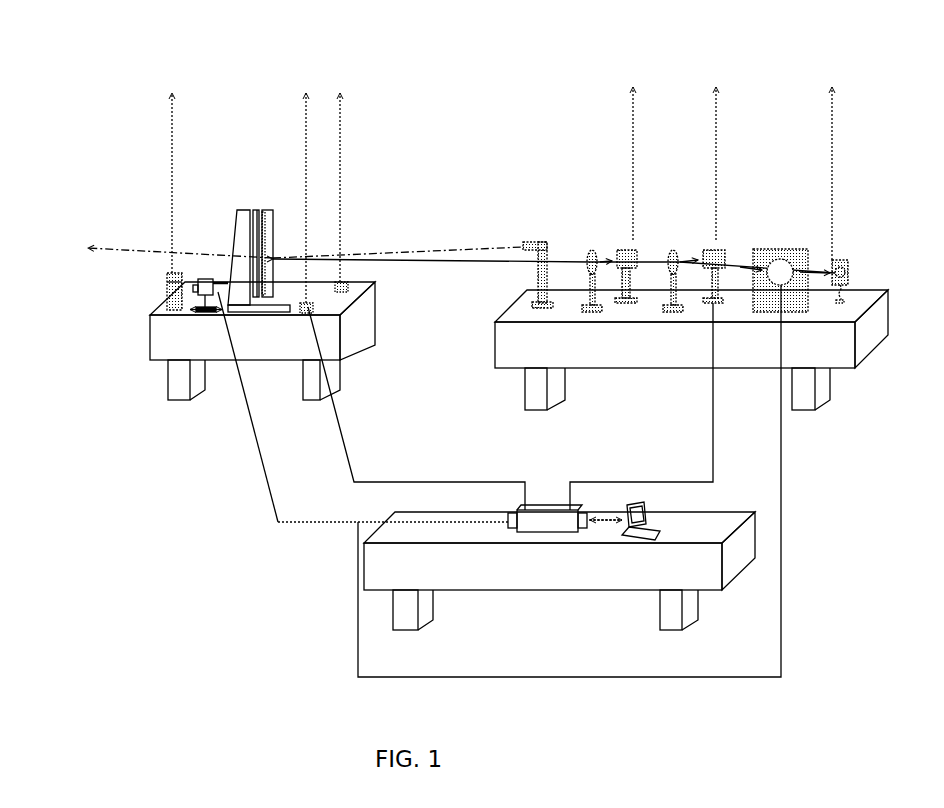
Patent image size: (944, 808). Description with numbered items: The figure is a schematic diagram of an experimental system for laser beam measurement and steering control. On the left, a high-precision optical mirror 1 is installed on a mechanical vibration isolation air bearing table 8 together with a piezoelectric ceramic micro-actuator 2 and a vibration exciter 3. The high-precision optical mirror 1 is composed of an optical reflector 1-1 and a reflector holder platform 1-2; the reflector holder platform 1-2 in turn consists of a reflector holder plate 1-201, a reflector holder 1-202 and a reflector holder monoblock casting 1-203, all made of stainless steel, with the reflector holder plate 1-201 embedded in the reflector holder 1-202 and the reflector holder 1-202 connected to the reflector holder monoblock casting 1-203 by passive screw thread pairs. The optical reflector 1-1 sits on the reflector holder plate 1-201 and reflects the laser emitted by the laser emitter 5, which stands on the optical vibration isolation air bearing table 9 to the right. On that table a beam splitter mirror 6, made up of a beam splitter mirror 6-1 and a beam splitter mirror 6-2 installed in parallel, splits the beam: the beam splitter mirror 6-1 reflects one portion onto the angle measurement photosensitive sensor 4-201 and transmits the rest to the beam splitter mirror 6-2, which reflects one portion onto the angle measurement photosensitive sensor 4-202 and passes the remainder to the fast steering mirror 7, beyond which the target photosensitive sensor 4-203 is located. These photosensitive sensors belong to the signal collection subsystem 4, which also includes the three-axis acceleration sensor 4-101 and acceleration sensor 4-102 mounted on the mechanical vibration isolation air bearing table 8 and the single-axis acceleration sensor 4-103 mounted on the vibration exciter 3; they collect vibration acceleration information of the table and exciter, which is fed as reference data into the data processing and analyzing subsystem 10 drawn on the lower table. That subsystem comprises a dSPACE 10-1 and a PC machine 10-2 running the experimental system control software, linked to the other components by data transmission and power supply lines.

The high-precision optical mirror 1 is at (280, 239).
The optical reflector 1-1 is at (290, 248).
The reflector holder platform 1-2 is at (174, 239).
The reflector holder plate 1-201 is at (268, 232).
The reflector holder 1-202 is at (256, 237).
The reflector holder monoblock casting 1-203 is at (243, 247).
The piezoelectric ceramic micro-actuator 2 is at (200, 297).
The vibration exciter 3 is at (170, 295).
The signal collection subsystem 4 is at (500, 174).
The acceleration sensor 4-101 is at (301, 190).
The acceleration sensor 4-102 is at (355, 179).
The acceleration sensor 4-103 is at (172, 170).
The angle measurement photosensitive sensor 4-201 is at (632, 183).
The angle measurement photosensitive sensor 4-202 is at (716, 183).
The target photosensitive sensor 4-203 is at (827, 183).
The laser emitter 5 is at (538, 242).
The beam splitter mirror 6 is at (631, 216).
The beam splitter mirror 6-1 is at (592, 240).
The beam splitter mirror 6-2 is at (673, 232).
The fast steering mirror 7 is at (780, 240).
The mechanical vibration isolation air bearing table 8 is at (357, 339).
The optical vibration isolation air bearing table 9 is at (535, 339).
The data processing and analyzing subsystem 10 is at (584, 483).
The dSPACE 10-1 is at (548, 523).
The PC machine 10-2 is at (624, 497).